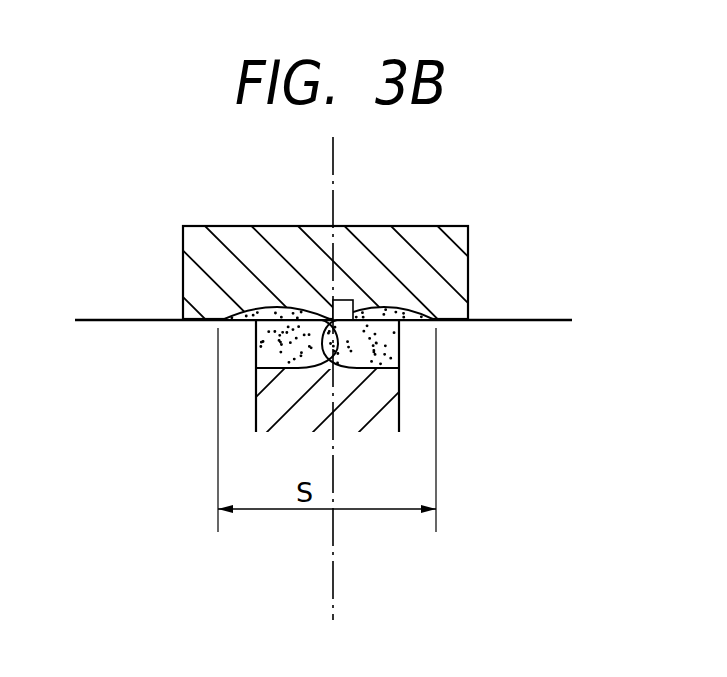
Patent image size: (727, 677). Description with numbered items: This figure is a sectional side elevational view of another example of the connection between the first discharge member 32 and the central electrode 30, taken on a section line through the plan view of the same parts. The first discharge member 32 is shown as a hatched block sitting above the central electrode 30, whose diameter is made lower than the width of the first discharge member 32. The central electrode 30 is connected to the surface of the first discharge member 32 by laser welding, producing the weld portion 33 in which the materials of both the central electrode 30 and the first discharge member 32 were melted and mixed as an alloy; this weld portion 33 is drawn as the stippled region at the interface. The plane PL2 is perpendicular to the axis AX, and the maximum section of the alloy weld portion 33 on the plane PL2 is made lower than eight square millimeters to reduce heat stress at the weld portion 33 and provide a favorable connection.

The central electrode 30 is at (272, 403).
The first discharge member 32 is at (205, 252).
The weld portion 33 is at (257, 338).
The plane PL2 is at (547, 321).
The axis AX is at (336, 395).